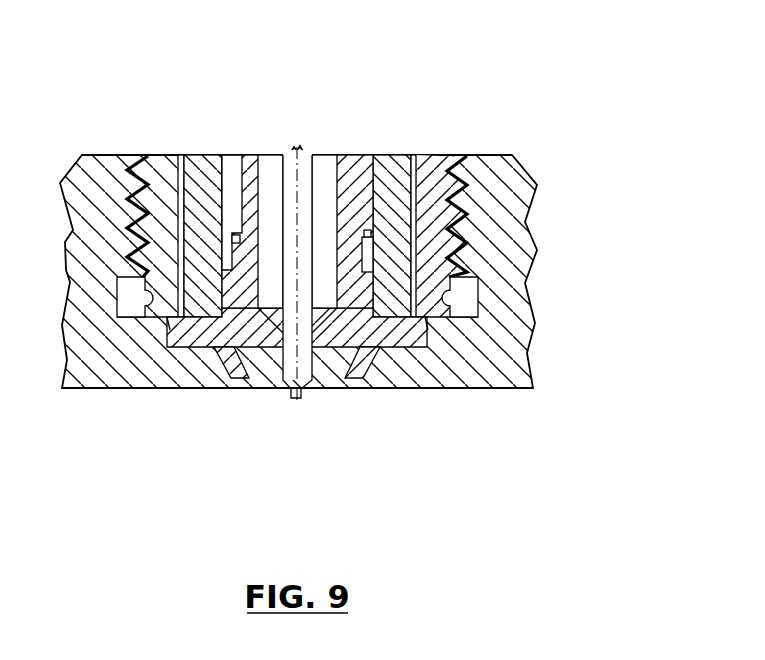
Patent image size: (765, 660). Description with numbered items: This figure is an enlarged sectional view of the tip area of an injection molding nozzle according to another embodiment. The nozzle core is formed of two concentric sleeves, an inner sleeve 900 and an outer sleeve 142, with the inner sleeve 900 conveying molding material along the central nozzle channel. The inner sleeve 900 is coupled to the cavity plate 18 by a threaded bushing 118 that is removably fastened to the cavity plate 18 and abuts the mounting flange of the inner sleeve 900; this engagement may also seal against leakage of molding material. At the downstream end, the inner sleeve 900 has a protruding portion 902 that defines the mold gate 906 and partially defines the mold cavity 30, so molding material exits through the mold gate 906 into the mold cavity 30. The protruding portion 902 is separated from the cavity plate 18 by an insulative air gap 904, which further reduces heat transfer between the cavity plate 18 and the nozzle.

The cavity plate 18 is at (537, 260).
The mold cavity 30 is at (442, 442).
The threaded bushing 118 is at (433, 157).
The outer sleeve 142 is at (385, 157).
The inner sleeve 900 is at (343, 157).
The protruding portion 902 is at (268, 362).
The insulative air gap 904 is at (233, 365).
The mold gate 906 is at (297, 395).